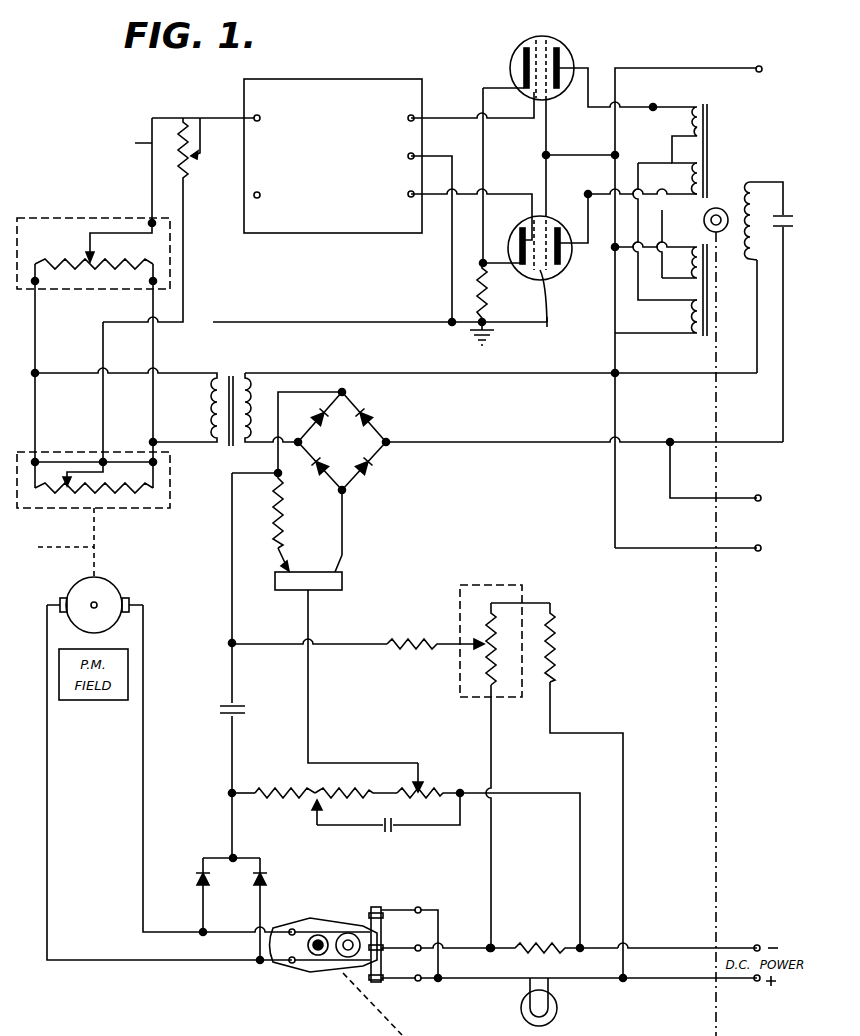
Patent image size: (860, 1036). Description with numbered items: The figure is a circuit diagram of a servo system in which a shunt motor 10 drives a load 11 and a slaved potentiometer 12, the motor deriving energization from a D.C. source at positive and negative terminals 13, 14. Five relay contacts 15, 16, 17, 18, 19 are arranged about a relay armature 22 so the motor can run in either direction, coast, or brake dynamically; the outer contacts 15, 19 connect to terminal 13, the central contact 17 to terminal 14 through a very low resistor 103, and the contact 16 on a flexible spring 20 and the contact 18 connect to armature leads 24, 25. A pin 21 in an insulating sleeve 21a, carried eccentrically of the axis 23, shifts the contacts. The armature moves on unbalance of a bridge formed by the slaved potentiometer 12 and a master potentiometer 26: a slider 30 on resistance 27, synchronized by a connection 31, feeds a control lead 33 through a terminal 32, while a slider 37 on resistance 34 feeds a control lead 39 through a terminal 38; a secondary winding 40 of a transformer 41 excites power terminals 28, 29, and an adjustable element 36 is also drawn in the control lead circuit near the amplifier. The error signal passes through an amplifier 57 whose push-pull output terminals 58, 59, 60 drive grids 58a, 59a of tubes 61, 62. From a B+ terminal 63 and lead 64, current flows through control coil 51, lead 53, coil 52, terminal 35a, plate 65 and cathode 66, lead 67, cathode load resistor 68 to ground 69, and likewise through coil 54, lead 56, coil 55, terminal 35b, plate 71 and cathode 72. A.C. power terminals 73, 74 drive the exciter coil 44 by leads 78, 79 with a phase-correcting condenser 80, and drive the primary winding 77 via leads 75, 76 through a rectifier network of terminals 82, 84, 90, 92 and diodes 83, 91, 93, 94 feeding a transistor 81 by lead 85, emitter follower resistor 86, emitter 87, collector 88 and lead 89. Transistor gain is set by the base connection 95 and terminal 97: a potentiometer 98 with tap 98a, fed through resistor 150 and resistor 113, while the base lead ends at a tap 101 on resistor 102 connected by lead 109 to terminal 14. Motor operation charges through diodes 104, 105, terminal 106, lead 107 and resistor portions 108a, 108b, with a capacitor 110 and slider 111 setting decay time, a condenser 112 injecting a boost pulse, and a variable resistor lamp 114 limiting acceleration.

The shunt motor 10 is at (67, 594).
The load 11 is at (38, 547).
The slaved potentiometer 12 is at (114, 510).
The positive D.C. terminal 13 is at (758, 982).
The negative D.C. terminal 14 is at (758, 945).
The outer relay contact 15 is at (390, 909).
The movable relay contact 16 is at (370, 920).
The central relay contact 17 is at (388, 944).
The movable relay contact 18 is at (372, 968).
The outer relay contact 19 is at (386, 982).
The flexible spring 20 is at (312, 920).
The pin 21 is at (349, 957).
The insulating sleeve 21a is at (322, 955).
The relay armature 22 is at (334, 920).
The axis 23 is at (290, 964).
The armature lead 24 is at (142, 800).
The armature lead 25 is at (48, 735).
The master potentiometer 26 is at (56, 228).
The resistance 27 is at (122, 487).
The power terminal 28 is at (154, 284).
The power terminal 29 is at (35, 284).
The slider 30 is at (66, 478).
The connection 31 is at (94, 528).
The terminal 32 is at (104, 460).
The control lead 33 is at (130, 324).
The resistance 34 is at (100, 270).
The terminal 35a is at (656, 105).
The terminal 35b is at (589, 190).
The potentiometer 36 is at (186, 124).
The slider 37 is at (94, 241).
The terminal 38 is at (150, 220).
The control lead 39 is at (135, 143).
The secondary winding 40 is at (210, 412).
The transformer 41 is at (232, 378).
The exciter coil 44 is at (756, 186).
The control coil 51 is at (690, 276).
The control coil 52 is at (688, 127).
The lead 53 is at (665, 212).
The control coil 54 is at (688, 323).
The control coil 55 is at (690, 166).
The lead 56 is at (640, 216).
The amplifier 57 is at (365, 88).
The push-pull output terminal 58 is at (414, 117).
The grid 58a is at (541, 36).
The push-pull output terminal 59 is at (414, 194).
The grid 59a is at (543, 272).
The push-pull output terminal 60 is at (414, 156).
The tube 61 is at (564, 52).
The tube 62 is at (558, 226).
The B+ terminal 63 is at (758, 66).
The lead 64 is at (666, 67).
The plate 65 is at (558, 90).
The cathode 66 is at (522, 60).
The lead 67 is at (485, 155).
The cathode load resistor 68 is at (488, 300).
The ground 69 is at (490, 342).
The plate 71 is at (561, 262).
The cathode 72 is at (500, 238).
The A.C. power terminal 73 is at (757, 552).
The A.C. power terminal 74 is at (758, 495).
The lead 75 is at (446, 376).
The lead 76 is at (464, 445).
The primary winding 77 is at (252, 384).
The lead 78 is at (686, 372).
The lead 79 is at (752, 442).
The condenser 80 is at (778, 228).
The transistor 81 is at (343, 582).
The terminal 82 is at (296, 440).
The diode 83 is at (320, 414).
The terminal 84 is at (348, 392).
The lead 85 is at (276, 460).
The emitter follower resistor 86 is at (272, 514).
The emitter 87 is at (292, 566).
The collector 88 is at (340, 562).
The lead 89 is at (344, 520).
The terminal 90 is at (346, 491).
The diode 91 is at (370, 470).
The terminal 92 is at (387, 446).
The diode 93 is at (374, 416).
The diode 94 is at (318, 476).
The base connection 95 is at (310, 615).
The terminal 97 is at (276, 480).
The potentiometer 98 is at (524, 585).
The adjustable tap 98a is at (480, 642).
The tap 101 is at (419, 772).
The resistor 102 is at (444, 792).
The resistor 103 is at (540, 945).
The diode 104 is at (200, 882).
The diode 105 is at (264, 882).
The terminal 106 is at (238, 857).
The lead 107 is at (230, 828).
The resistor portion 108a is at (284, 788).
The resistor portion 108b is at (352, 790).
The lead 109 is at (518, 793).
The capacitor 110 is at (384, 832).
The slider 111 is at (322, 810).
The condenser 112 is at (246, 705).
The resistor 113 is at (406, 650).
The variable resistor lamp 114 is at (560, 1012).
The resistor 150 is at (556, 652).